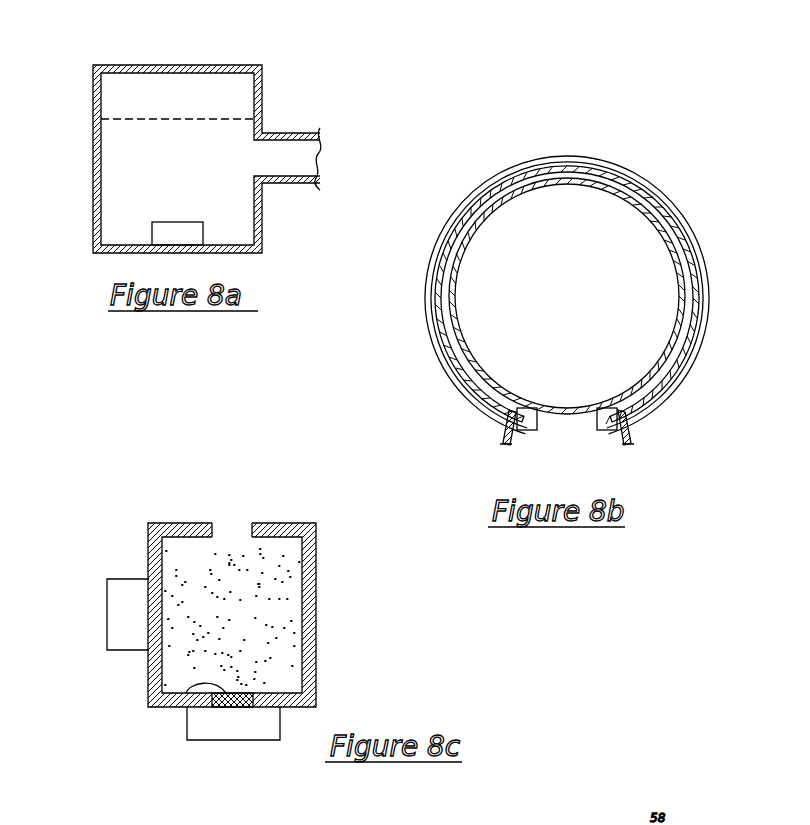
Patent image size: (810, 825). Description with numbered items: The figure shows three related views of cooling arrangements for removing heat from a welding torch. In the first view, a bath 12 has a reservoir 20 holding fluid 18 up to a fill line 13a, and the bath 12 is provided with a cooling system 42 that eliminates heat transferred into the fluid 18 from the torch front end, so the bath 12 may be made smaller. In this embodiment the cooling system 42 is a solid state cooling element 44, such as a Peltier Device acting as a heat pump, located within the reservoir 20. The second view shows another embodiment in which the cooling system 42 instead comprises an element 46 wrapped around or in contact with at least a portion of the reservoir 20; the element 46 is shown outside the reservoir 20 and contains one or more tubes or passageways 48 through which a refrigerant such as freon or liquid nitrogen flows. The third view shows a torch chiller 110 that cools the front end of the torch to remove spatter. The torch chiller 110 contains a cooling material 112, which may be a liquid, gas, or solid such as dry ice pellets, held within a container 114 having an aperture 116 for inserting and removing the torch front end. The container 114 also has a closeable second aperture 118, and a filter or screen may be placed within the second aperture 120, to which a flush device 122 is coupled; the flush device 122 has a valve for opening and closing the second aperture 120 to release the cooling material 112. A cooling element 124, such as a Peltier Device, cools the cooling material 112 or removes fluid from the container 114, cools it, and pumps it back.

In FIG. 8A, the bath 12 is at (183, 151).
In FIG. 8A, the fill line 13a is at (229, 118).
In FIG. 8A, the fluid 18 is at (235, 166).
In FIG. 8A, the reservoir 20 is at (93, 97).
In FIG. 8B, the reservoir 20 is at (566, 414).
In FIG. 8A, the cooling system 42 is at (177, 190).
In FIG. 8B, the cooling system 42 is at (553, 300).
In FIG. 8A, the solid state cooling element 44 is at (191, 244).
In FIG. 8B, the element 46 is at (432, 333).
In FIG. 8B, the tubes or passageways 48 is at (450, 367).
In FIG. 8C, the torch chiller 110 is at (224, 616).
In FIG. 8C, the cooling material 112 is at (254, 618).
In FIG. 8C, the container 114 is at (317, 607).
In FIG. 8C, the aperture 116 is at (250, 530).
In FIG. 8C, the closeable second aperture 118 is at (186, 693).
In FIG. 8C, the second aperture 120 is at (246, 703).
In FIG. 8C, the flush device 122 is at (212, 741).
In FIG. 8C, the cooling element 124 is at (107, 610).